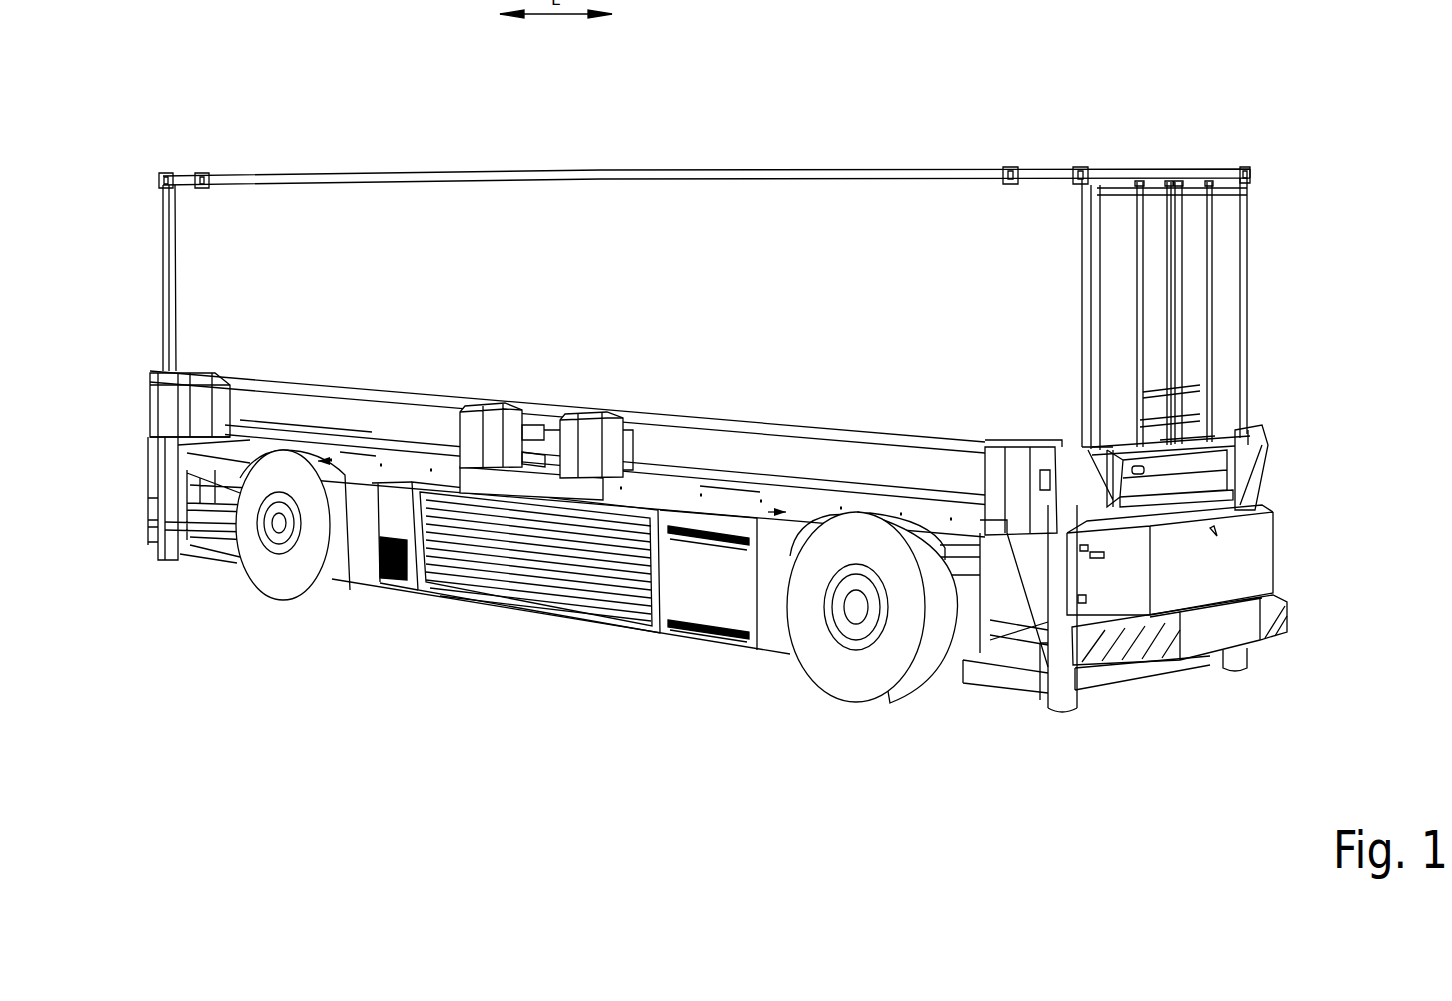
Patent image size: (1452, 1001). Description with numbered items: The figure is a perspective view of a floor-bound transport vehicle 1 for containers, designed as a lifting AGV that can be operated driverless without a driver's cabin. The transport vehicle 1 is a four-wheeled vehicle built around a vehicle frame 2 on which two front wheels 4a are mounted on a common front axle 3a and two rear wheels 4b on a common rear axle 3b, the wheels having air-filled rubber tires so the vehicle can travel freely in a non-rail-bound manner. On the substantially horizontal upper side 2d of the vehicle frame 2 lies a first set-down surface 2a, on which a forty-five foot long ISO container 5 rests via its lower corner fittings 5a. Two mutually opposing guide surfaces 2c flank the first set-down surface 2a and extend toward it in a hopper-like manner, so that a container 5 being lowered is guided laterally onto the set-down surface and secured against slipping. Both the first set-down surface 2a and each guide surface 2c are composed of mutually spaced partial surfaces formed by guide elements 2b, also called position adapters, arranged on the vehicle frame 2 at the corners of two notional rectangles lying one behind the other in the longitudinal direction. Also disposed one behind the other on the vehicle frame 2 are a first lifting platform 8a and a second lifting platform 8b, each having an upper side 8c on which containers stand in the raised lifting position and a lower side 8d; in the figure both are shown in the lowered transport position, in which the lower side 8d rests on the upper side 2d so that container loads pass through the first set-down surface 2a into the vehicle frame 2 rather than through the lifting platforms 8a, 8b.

The transport vehicle 1 is at (592, 647).
The vehicle frame 2 is at (577, 488).
The first set-down surface 2a is at (530, 413).
The guide element 2b is at (158, 403).
The guide surface 2c is at (517, 400).
The upper side of the vehicle frame 2d is at (733, 490).
The front axle 3a is at (268, 540).
The rear axle 3b is at (833, 648).
The front wheel 4a is at (262, 598).
The rear wheel 4b is at (878, 703).
The container 5 is at (925, 195).
The corner fitting 5a is at (197, 170).
The first lifting platform 8a is at (373, 415).
The second lifting platform 8b is at (1190, 487).
The upper side of the lifting platform 8c is at (1185, 447).
The lower side of the lifting platform 8d is at (376, 445).